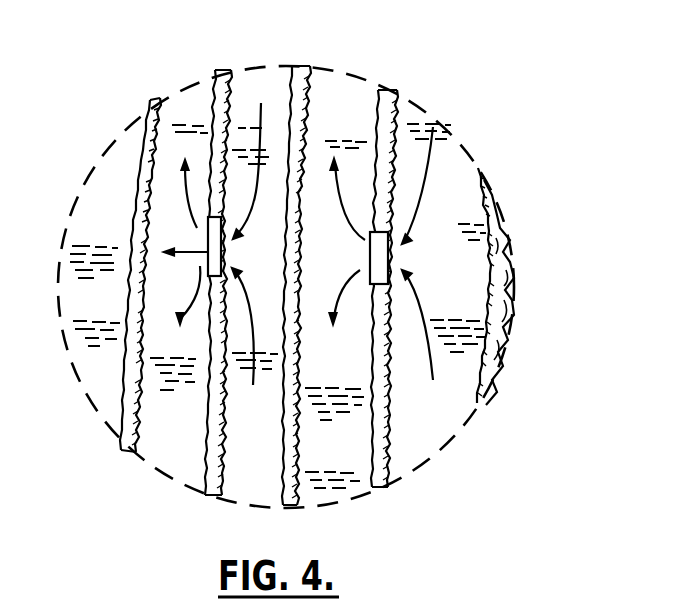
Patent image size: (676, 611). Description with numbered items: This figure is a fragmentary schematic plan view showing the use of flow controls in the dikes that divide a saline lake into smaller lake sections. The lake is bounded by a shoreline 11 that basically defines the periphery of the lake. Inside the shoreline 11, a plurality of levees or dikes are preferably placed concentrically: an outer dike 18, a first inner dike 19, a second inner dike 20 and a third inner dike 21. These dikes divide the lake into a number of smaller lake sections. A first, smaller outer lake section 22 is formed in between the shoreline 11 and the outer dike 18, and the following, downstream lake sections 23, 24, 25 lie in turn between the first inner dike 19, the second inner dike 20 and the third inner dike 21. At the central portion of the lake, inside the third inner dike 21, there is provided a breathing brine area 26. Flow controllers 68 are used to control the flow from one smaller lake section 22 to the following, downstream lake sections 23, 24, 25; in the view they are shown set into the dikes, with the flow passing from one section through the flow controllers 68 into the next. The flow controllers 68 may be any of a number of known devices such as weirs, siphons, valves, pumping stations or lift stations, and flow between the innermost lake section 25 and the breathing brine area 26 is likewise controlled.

The shoreline 11 is at (483, 397).
The outer dike 18 is at (387, 92).
The first inner dike 19 is at (301, 66).
The second inner dike 20 is at (223, 72).
The third inner dike 21 is at (156, 100).
The first outer lake section 22 is at (413, 447).
The lake section 23 is at (320, 470).
The lake section 24 is at (263, 470).
The innermost lake section 25 is at (178, 445).
The breathing brine area 26 is at (104, 367).
The flow controller 68 is at (222, 242).